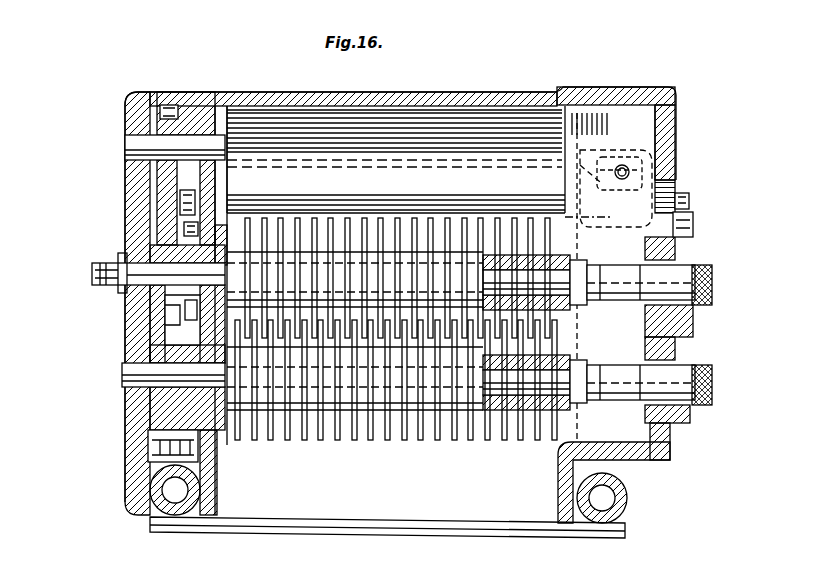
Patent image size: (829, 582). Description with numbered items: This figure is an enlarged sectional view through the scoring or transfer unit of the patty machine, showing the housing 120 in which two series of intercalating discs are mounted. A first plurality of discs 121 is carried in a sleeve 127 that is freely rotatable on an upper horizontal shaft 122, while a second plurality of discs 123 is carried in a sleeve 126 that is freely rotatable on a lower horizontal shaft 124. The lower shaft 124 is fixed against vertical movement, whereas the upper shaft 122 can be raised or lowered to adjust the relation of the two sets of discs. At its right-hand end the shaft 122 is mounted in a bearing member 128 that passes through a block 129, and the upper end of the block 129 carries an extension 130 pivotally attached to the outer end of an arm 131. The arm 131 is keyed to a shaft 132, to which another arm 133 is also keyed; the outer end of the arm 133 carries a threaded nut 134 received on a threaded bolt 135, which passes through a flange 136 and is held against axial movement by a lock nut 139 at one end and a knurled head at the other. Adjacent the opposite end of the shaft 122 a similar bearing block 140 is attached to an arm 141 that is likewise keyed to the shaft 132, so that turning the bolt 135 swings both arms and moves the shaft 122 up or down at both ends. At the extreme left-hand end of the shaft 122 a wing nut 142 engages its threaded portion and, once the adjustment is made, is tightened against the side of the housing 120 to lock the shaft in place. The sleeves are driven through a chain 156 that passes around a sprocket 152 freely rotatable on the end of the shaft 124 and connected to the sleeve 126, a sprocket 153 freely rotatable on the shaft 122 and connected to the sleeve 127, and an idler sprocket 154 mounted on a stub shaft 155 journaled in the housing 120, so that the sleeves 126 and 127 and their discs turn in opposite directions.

The housing 120 is at (490, 96).
The first plurality of discs 121 is at (443, 226).
The upper horizontal shaft 122 is at (162, 285).
The second plurality of discs 123 is at (431, 440).
The lower horizontal shaft 124 is at (130, 378).
The sleeve 126 is at (261, 407).
The sleeve 127 is at (317, 247).
The bearing member 128 is at (620, 303).
The block 129 is at (678, 333).
The extension 130 is at (684, 236).
The arm 131 is at (690, 198).
The shaft 132 is at (515, 203).
The arm 133 is at (568, 165).
The threaded nut 134 is at (676, 144).
The threaded bolt 135 is at (625, 190).
The flange 136 is at (676, 165).
The lock nut 139 is at (622, 166).
The bearing block 140 is at (228, 232).
The arm 141 is at (184, 218).
The wing nut 142 is at (113, 262).
The sprocket 152 is at (167, 410).
The sprocket 153 is at (170, 310).
The idler sprocket 154 is at (170, 108).
The stub shaft 155 is at (132, 148).
The chain 156 is at (178, 212).